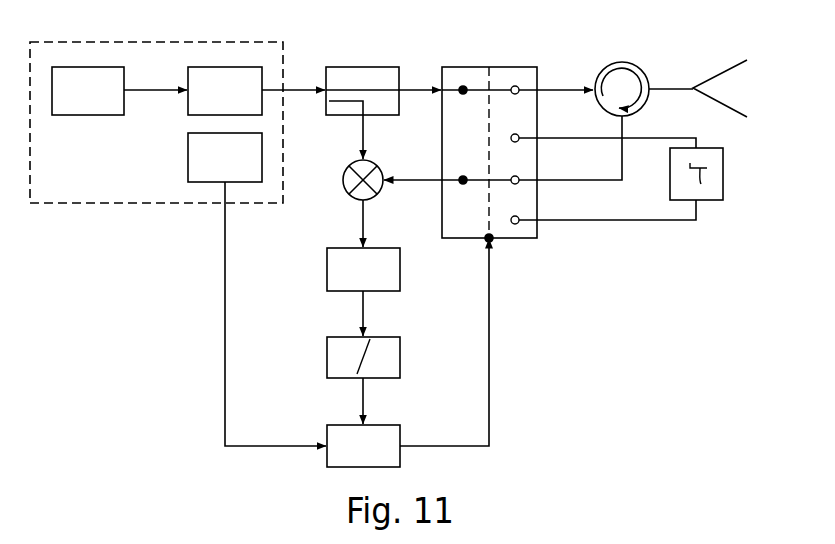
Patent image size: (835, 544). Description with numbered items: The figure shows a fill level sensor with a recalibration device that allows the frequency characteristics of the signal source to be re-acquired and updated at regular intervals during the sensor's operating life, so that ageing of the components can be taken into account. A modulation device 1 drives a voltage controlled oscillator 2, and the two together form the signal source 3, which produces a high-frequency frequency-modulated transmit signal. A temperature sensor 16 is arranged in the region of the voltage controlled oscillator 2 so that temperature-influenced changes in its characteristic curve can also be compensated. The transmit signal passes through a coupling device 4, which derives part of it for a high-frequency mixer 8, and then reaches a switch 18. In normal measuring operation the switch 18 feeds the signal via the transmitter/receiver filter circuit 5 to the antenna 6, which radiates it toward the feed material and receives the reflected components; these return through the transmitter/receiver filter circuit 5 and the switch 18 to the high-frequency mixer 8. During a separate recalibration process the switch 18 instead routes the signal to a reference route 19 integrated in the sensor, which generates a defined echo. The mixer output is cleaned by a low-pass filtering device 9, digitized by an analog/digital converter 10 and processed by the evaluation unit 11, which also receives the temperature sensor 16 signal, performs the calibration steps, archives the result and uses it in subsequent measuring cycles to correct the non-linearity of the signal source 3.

The modulation device 1 is at (80, 116).
The voltage controlled oscillator 2 is at (230, 67).
The signal source 3 is at (108, 204).
The coupling device 4 is at (365, 67).
The transmitter/receiver filter circuit 5 is at (627, 63).
The antenna 6 is at (718, 74).
The high-frequency mixer 8 is at (347, 194).
The low-pass filtering device 9 is at (400, 270).
The analog/digital converter 10 is at (400, 357).
The evaluation unit 11 is at (400, 452).
The temperature sensor 16 is at (188, 158).
The switch 18 is at (487, 67).
The reference route 19 is at (710, 201).